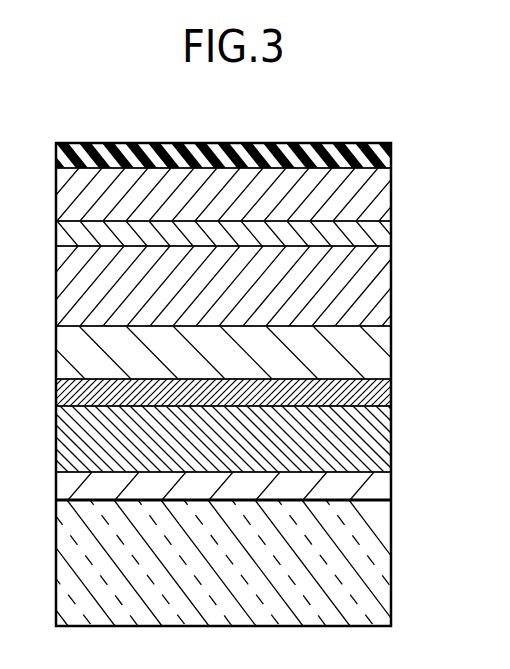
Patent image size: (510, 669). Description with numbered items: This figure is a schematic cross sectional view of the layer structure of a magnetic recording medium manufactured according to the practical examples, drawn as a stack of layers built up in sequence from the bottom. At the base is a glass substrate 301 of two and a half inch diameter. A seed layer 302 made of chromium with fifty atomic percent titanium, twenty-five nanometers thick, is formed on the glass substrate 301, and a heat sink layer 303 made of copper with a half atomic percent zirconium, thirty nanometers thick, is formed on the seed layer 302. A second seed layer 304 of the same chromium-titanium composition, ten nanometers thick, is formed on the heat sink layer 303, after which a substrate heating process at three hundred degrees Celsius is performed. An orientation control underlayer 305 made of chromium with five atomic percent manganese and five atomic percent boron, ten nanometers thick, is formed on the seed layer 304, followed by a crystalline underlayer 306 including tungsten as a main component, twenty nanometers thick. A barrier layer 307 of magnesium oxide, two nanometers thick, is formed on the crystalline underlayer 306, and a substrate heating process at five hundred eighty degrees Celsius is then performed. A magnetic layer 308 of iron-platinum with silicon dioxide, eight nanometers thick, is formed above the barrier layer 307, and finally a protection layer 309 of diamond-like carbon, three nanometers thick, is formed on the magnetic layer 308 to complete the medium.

The glass substrate 301 is at (382, 562).
The seed layer 302 is at (380, 485).
The heat sink layer 303 is at (380, 438).
The seed layer 304 is at (385, 391).
The orientation control underlayer 305 is at (380, 355).
The crystalline underlayer 306 is at (380, 288).
The barrier layer 307 is at (378, 233).
The magnetic layer 308 is at (383, 192).
The protection layer 309 is at (387, 155).